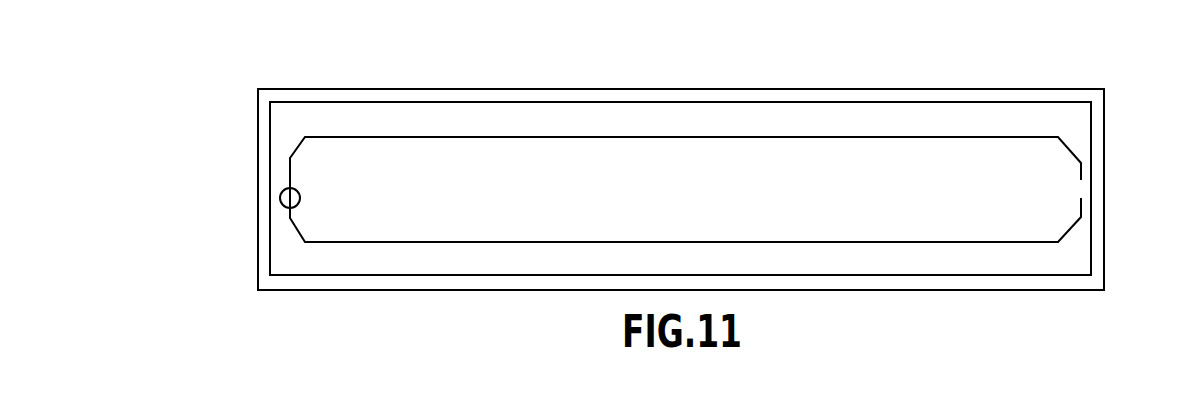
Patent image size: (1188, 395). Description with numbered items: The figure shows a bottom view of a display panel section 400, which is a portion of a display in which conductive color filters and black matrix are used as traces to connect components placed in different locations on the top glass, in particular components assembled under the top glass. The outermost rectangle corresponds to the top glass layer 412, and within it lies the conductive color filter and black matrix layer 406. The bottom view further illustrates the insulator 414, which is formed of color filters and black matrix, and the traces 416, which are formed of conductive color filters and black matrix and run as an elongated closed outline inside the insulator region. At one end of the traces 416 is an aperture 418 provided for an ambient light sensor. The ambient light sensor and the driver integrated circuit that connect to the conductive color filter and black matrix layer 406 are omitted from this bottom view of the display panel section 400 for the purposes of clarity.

The display panel section 400 is at (223, 50).
The top glass layer 412 is at (1104, 114).
The conductive color filter and black matrix layer 406 is at (1075, 252).
The insulator (color filters black matrix) 414 is at (622, 117).
The traces (conductive color filters and black matrix) 416 is at (645, 242).
The aperture 418 is at (280, 210).